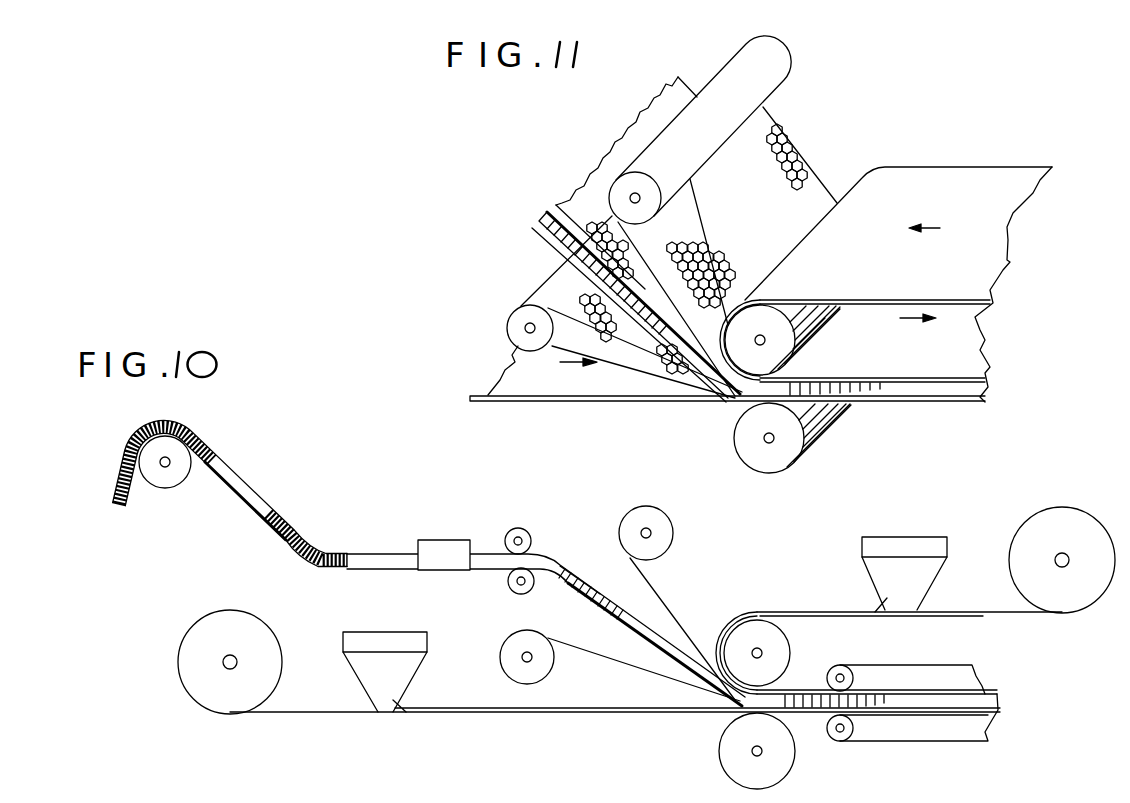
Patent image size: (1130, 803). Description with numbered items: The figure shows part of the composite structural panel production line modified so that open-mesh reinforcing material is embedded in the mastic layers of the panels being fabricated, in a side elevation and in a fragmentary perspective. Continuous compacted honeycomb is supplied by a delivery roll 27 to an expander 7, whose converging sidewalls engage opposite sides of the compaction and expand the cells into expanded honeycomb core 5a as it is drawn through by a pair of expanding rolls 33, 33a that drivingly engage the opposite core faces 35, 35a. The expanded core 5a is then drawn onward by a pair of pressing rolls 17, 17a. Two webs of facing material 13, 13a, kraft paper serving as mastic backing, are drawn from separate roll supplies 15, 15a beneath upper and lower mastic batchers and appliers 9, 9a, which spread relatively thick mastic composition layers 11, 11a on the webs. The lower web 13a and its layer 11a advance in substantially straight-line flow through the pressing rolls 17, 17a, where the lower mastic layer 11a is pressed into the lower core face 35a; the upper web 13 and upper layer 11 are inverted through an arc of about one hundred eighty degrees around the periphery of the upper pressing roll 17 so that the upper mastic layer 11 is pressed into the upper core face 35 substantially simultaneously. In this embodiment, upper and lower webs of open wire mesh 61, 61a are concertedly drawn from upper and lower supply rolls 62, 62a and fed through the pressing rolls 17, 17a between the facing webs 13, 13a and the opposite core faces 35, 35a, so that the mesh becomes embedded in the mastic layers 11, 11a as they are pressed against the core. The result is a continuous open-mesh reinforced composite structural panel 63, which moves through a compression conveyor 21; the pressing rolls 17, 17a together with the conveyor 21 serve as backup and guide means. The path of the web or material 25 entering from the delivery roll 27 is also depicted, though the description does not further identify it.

In FIG. 10, the expanded honeycomb core 5a is at (603, 606).
In FIG. 11, the expanded honeycomb core 5a is at (544, 214).
In FIG. 10, the expander 7 is at (438, 540).
In FIG. 10, the upper mastic composition batcher and applier 9 is at (862, 546).
In FIG. 10, the lower mastic composition batcher and applier 9a is at (373, 640).
In FIG. 10, the upper mastic composition layer 11 is at (815, 612).
In FIG. 11, the upper mastic composition layer 11 is at (1040, 168).
In FIG. 10, the lower mastic composition layer 11a is at (432, 712).
In FIG. 11, the lower mastic composition layer 11a is at (496, 378).
In FIG. 10, the upper web of facing material 13 is at (985, 590).
In FIG. 11, the upper web of facing material 13 is at (996, 302).
In FIG. 10, the lower web of facing material 13a is at (332, 678).
In FIG. 11, the lower web of facing material 13a is at (510, 403).
In FIG. 10, the upper roll supply of facing material 15 is at (1012, 525).
In FIG. 10, the lower roll supply of facing material 15a is at (270, 624).
In FIG. 10, the upper pressing roll 17 is at (781, 651).
In FIG. 11, the upper pressing roll 17 is at (780, 352).
In FIG. 10, the lower pressing roll 17a is at (719, 752).
In FIG. 11, the lower pressing roll 17a is at (740, 437).
In FIG. 10, the compression conveyor 21 is at (892, 662).
In FIG. 10, the hatched web 25 is at (120, 474).
In FIG. 10, the delivery roll 27 is at (164, 490).
In FIG. 10, the upper expanding roll 33 is at (521, 528).
In FIG. 10, the lower expanding roll 33a is at (508, 584).
In FIG. 10, the upper core face 35 is at (606, 550).
In FIG. 11, the upper core face 35 is at (572, 194).
In FIG. 10, the lower core face 35a is at (586, 600).
In FIG. 11, the lower core face 35a is at (550, 242).
In FIG. 10, the upper web of open wire mesh 61 is at (668, 592).
In FIG. 11, the upper web of open wire mesh 61 is at (821, 183).
In FIG. 10, the lower web of open wire mesh 61a is at (636, 676).
In FIG. 11, the lower web of open wire mesh 61a is at (666, 364).
In FIG. 10, the upper supply roll of wire mesh 62 is at (673, 524).
In FIG. 11, the upper supply roll of wire mesh 62 is at (786, 80).
In FIG. 10, the lower supply roll of wire mesh 62a is at (508, 640).
In FIG. 11, the lower supply roll of wire mesh 62a is at (509, 326).
In FIG. 10, the open-mesh reinforced composite structural panel 63 is at (918, 704).
In FIG. 11, the open-mesh reinforced composite structural panel 63 is at (921, 382).